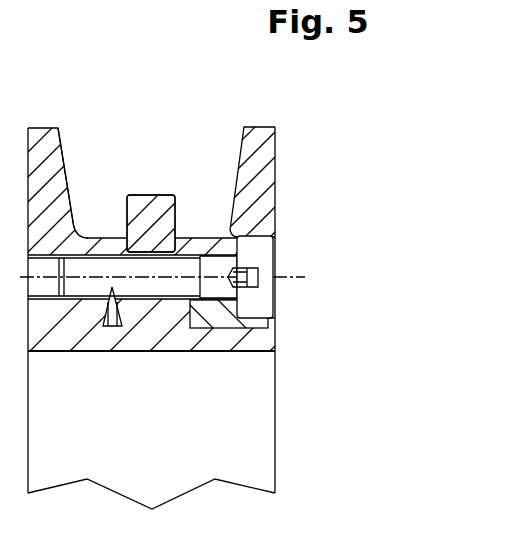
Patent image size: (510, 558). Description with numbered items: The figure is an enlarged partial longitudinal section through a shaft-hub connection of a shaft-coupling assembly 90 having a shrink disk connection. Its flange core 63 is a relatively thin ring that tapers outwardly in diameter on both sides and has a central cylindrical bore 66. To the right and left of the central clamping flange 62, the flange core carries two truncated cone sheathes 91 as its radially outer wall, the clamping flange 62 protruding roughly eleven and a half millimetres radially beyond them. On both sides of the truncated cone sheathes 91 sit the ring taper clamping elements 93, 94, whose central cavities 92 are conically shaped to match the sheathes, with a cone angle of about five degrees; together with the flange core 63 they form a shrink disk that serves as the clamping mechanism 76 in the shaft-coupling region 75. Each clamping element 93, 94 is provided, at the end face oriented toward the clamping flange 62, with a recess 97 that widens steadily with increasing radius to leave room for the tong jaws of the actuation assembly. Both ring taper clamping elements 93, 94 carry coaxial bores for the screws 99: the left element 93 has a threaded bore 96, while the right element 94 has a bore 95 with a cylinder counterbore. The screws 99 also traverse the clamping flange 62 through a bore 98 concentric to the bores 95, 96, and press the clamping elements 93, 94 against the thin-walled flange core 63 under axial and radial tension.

The shaft-coupling assembly 90 is at (280, 181).
The left ring taper clamping element 93 is at (46, 150).
The recess 97 is at (73, 225).
The bore 98 is at (142, 250).
The right ring taper clamping element 94 is at (257, 158).
The central clamping flange 62 is at (165, 222).
The bore having cylinder counterbore 95 is at (267, 235).
The screw 99 is at (258, 263).
The flange core 63 is at (155, 315).
The clamping mechanism 76 is at (286, 344).
The shaft-coupling region 75 is at (286, 360).
The threaded bore 96 is at (53, 298).
The truncated cone sheath 91 is at (25, 333).
The central cavity 92 is at (122, 326).
The central cylindrical bore 66 is at (199, 350).